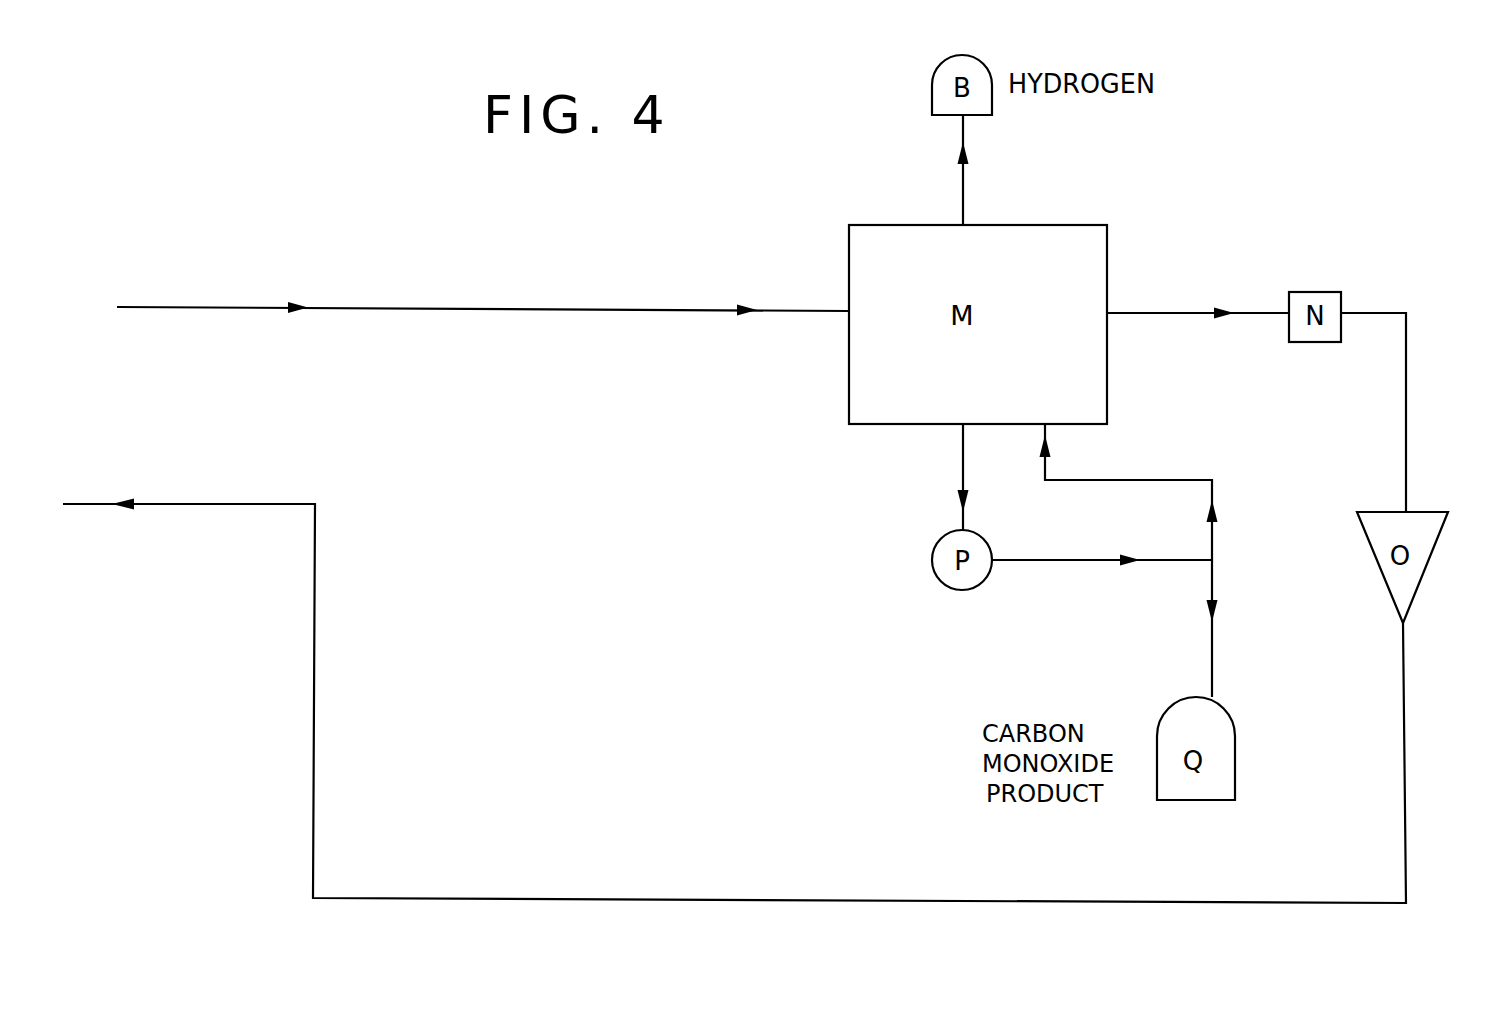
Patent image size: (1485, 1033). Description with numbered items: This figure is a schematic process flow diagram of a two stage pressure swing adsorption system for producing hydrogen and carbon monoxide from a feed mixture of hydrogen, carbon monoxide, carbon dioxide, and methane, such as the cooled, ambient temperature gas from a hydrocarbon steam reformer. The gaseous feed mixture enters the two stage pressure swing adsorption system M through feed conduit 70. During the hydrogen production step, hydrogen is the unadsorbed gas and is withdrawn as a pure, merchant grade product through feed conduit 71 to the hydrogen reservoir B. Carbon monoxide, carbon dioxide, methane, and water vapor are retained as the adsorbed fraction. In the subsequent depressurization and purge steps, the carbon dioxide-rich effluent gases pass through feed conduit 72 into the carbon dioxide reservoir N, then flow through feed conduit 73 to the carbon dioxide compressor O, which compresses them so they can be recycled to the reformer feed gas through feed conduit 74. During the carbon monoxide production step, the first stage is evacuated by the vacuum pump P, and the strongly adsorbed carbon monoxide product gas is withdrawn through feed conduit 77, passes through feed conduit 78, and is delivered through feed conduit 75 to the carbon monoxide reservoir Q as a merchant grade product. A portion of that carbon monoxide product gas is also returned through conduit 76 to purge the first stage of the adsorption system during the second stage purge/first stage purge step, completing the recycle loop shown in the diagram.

The feed conduit 70 is at (541, 309).
The feed conduit 71 is at (964, 192).
The feed conduit 72 is at (1154, 313).
The feed conduit 73 is at (1407, 440).
The feed conduit 74 is at (1407, 695).
The feed conduit 75 is at (1245, 656).
The conduit 76 is at (1213, 540).
The feed conduit 77 is at (964, 438).
The feed conduit 78 is at (1053, 570).